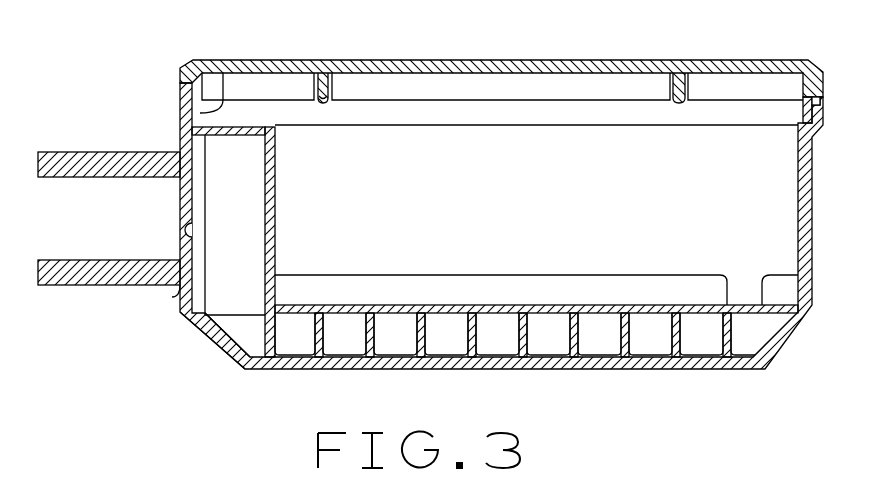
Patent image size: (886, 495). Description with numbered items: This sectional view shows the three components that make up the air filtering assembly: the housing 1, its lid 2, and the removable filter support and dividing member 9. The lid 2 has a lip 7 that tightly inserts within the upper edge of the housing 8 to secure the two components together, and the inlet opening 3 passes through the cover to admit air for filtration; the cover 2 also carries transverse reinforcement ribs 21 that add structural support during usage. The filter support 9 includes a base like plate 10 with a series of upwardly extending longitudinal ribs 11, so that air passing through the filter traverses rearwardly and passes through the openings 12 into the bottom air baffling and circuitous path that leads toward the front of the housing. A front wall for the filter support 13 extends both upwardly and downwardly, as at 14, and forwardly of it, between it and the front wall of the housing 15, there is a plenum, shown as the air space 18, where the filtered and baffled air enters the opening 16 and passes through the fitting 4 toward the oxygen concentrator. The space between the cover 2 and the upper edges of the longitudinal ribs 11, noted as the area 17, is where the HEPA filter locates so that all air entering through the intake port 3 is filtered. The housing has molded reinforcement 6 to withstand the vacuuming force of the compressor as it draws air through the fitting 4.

The housing 1 is at (795, 340).
The lid 2 is at (703, 70).
The inlet opening 3 is at (293, 62).
The fitting 4 is at (100, 278).
The reinforcement 6 is at (441, 350).
The lip 7 is at (224, 72).
The upper edge of the housing 8 is at (820, 104).
The filter support and dividing member 9 is at (282, 228).
The base like plate 10 is at (513, 306).
The longitudinal ribs 11 is at (645, 275).
The openings 12 is at (763, 305).
The front wall for the filter support 13 is at (280, 172).
The downward extension of the front wall 14 is at (276, 337).
The front wall of the housing 15 is at (197, 313).
The opening 16 is at (181, 224).
The area 17 is at (499, 190).
The air space 18 is at (218, 204).
The transverse reinforcement ribs 21 is at (686, 87).